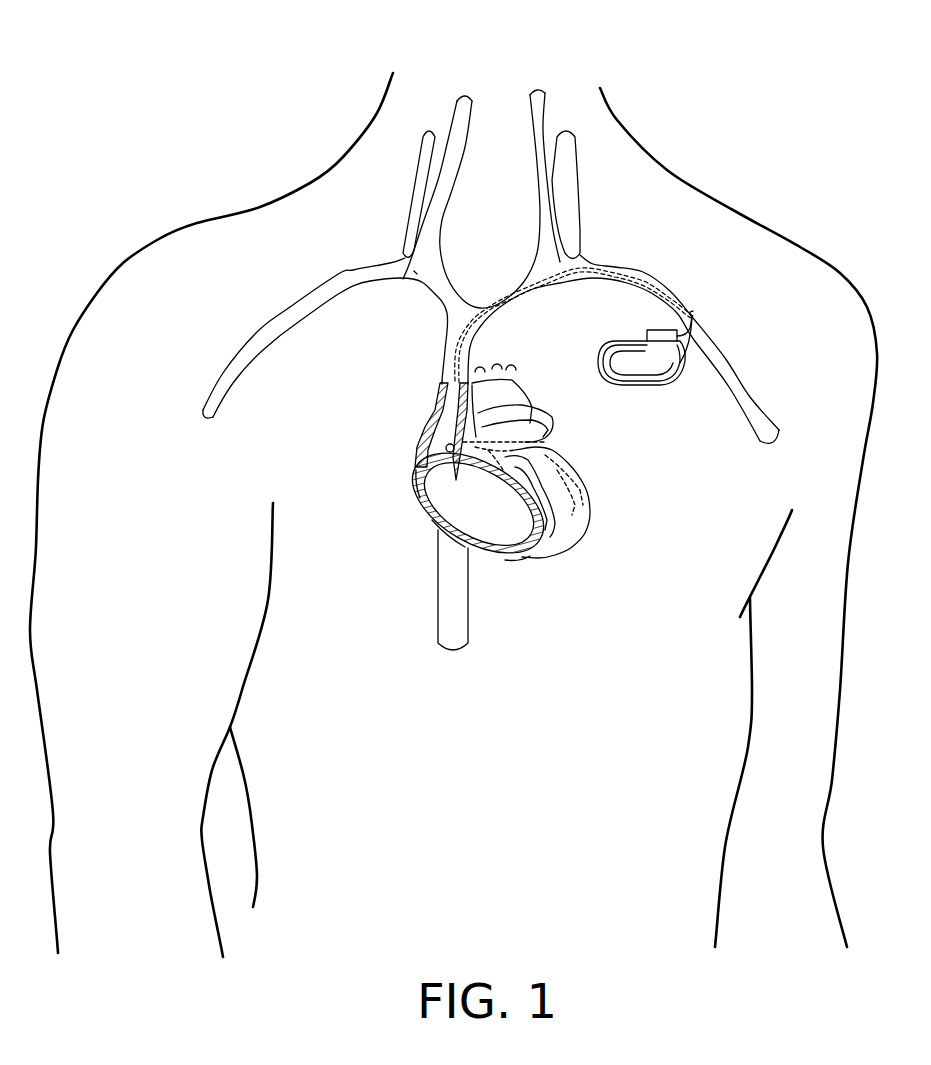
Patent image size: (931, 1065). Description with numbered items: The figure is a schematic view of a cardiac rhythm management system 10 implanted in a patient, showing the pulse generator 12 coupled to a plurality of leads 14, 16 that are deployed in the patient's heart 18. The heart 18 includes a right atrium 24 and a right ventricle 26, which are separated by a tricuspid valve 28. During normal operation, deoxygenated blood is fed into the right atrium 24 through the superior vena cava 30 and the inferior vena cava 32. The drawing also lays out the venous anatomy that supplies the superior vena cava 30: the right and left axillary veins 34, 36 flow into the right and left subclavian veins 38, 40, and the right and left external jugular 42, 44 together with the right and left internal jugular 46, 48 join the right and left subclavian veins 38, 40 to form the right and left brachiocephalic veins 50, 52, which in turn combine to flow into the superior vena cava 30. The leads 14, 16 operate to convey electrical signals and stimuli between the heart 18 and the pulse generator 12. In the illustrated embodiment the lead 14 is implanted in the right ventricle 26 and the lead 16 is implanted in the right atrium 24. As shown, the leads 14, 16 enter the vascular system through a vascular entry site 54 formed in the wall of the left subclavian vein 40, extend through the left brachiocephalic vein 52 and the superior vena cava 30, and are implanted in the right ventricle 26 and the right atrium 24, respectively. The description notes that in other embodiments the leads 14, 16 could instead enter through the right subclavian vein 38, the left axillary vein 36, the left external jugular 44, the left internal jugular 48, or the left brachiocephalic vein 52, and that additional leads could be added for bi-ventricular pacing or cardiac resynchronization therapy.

The cardiac rhythm management (CRM) system 10 is at (276, 92).
The pulse generator 12 is at (664, 357).
The lead 14 is at (487, 560).
The lead 16 is at (446, 418).
The heart 18 is at (612, 552).
The right atrium 24 is at (430, 468).
The right ventricle 26 is at (535, 555).
The tricuspid valve 28 is at (440, 525).
The superior vena cava 30 is at (444, 368).
The inferior vena cava 32 is at (438, 593).
The right axillary vein 34 is at (201, 412).
The left axillary vein 36 is at (781, 426).
The right subclavian vein 38 is at (257, 332).
The left subclavian vein 40 is at (593, 254).
The right external jugular 42 is at (406, 207).
The left external jugular 44 is at (580, 217).
The right internal jugular 46 is at (457, 121).
The left internal jugular 48 is at (545, 117).
The right brachiocephalic vein 50 is at (417, 274).
The left brachiocephalic vein 52 is at (542, 273).
The vascular entry site 54 is at (696, 317).